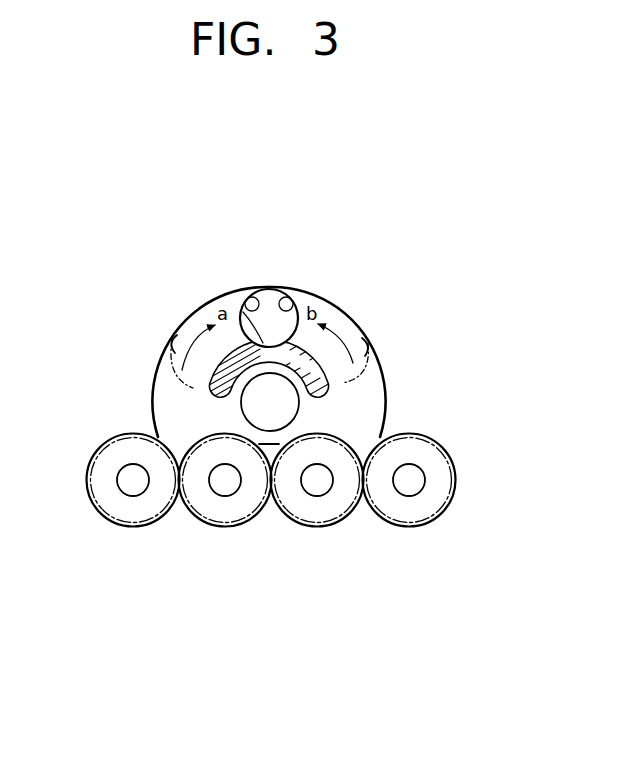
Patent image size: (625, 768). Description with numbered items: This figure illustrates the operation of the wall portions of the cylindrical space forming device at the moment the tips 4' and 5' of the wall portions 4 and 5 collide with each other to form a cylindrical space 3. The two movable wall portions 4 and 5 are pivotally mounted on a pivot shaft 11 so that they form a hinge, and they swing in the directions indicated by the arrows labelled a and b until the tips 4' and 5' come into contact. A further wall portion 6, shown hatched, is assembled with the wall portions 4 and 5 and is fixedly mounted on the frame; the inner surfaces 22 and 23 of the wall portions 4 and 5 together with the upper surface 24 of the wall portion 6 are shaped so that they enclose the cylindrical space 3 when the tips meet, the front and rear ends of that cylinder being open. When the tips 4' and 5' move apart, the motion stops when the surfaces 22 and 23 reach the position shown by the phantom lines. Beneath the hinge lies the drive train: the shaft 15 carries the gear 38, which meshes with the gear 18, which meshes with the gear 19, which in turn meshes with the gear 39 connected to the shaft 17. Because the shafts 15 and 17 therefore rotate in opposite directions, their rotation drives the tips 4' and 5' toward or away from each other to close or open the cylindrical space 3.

The cylindrical space 3 is at (283, 328).
The wall portion 4 is at (145, 372).
The wall portion 5 is at (392, 372).
The tip 4' is at (234, 255).
The tip 5' is at (303, 255).
The wall portion 6 is at (332, 397).
The pivot shaft 11 is at (250, 403).
The shaft 15 is at (124, 483).
The shaft 17 is at (418, 479).
The gear 18 is at (223, 529).
The gear 19 is at (320, 529).
The inner surface 22 is at (249, 298).
The inner surface 23 is at (289, 298).
The upper surface 24 is at (243, 312).
The gear 38 is at (117, 529).
The gear 39 is at (430, 523).